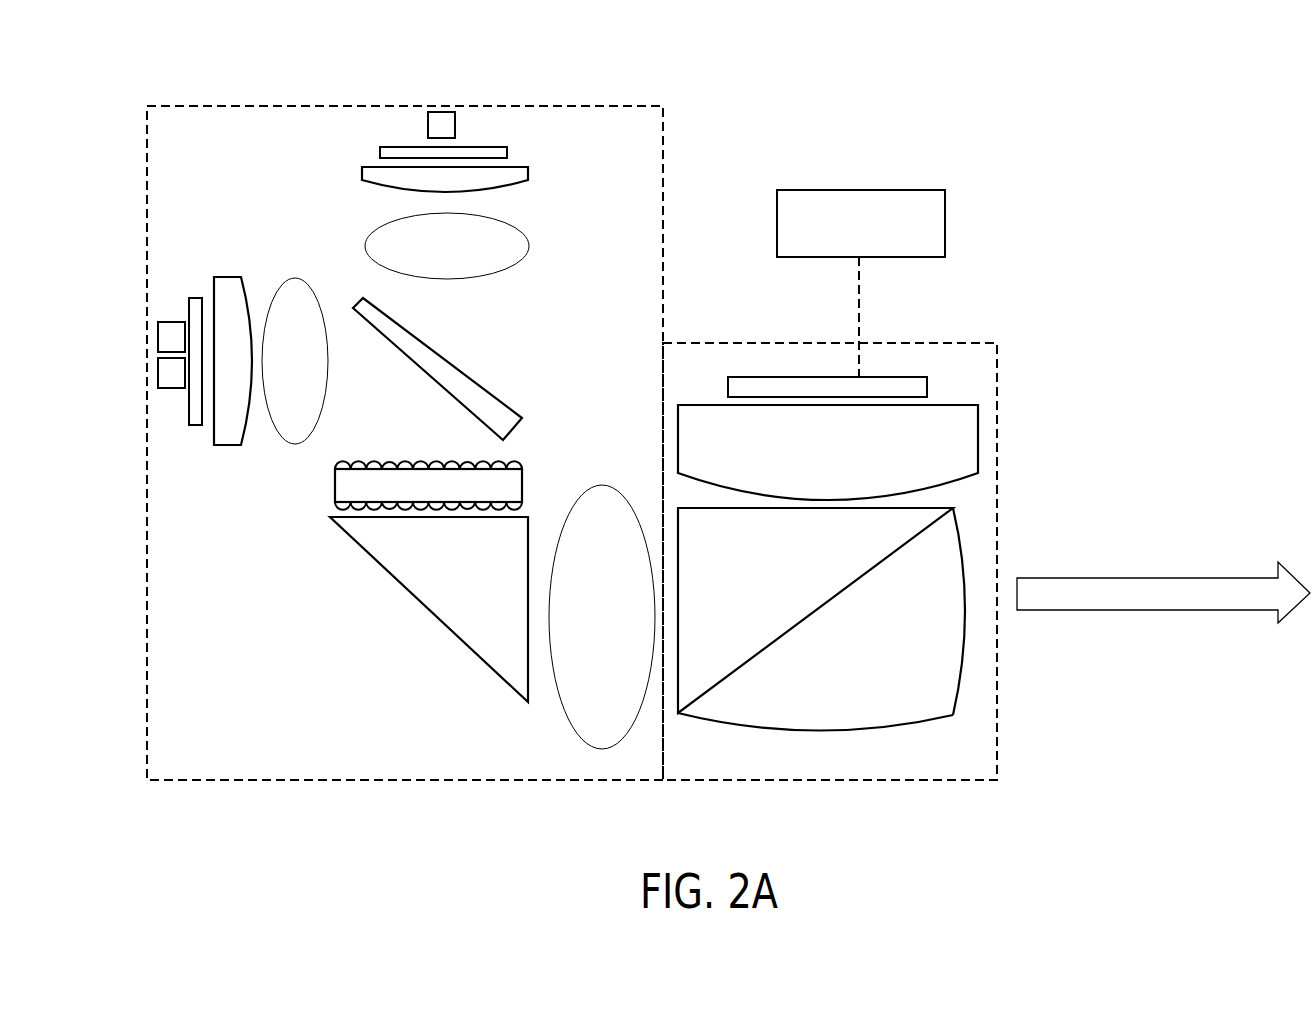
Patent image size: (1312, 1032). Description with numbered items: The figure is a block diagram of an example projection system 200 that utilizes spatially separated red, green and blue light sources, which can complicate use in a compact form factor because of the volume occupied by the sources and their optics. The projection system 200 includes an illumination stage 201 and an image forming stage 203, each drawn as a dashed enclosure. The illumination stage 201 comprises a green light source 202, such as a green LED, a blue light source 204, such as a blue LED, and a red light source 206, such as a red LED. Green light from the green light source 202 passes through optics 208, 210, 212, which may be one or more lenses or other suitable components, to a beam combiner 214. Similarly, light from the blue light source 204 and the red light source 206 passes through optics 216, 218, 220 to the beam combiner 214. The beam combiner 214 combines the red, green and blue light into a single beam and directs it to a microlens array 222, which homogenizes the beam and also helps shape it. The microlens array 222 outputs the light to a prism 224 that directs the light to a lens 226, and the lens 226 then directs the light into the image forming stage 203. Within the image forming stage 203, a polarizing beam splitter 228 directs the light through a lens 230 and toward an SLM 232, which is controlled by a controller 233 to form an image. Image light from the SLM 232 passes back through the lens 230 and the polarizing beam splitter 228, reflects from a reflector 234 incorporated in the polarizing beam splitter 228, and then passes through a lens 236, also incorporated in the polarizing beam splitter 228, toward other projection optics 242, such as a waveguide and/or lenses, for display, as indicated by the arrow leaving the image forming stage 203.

The projection system 200 is at (1140, 58).
The illumination stage 201 is at (626, 106).
The green light source 202 is at (455, 126).
The image forming stage 203 is at (948, 343).
The blue light source 204 is at (158, 334).
The red light source 206 is at (158, 369).
The optics 208 is at (507, 152).
The optics 210 is at (528, 178).
The optics 212 is at (464, 257).
The beam combiner 214 is at (461, 370).
The optics 216 is at (195, 297).
The optics 218 is at (237, 277).
The optics 220 is at (311, 372).
The microlens array 222 is at (335, 485).
The prism 224 is at (483, 586).
The lens 226 is at (619, 628).
The polarizing beam splitter 228 is at (766, 598).
The lens 230 is at (849, 461).
The SLM 232 is at (927, 387).
The controller 233 is at (925, 234).
The reflector 234 is at (830, 726).
The lens 236 is at (951, 629).
The projection optics 242 is at (1272, 604).